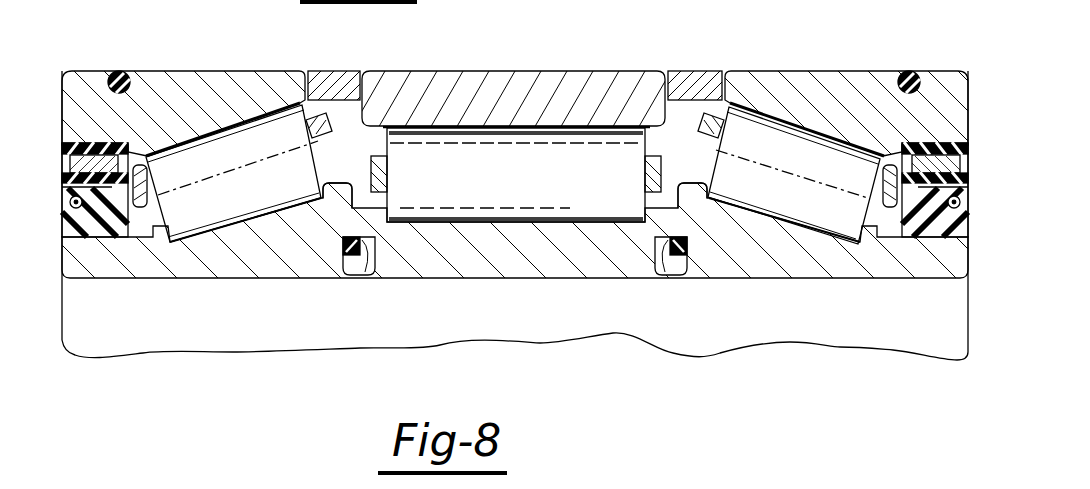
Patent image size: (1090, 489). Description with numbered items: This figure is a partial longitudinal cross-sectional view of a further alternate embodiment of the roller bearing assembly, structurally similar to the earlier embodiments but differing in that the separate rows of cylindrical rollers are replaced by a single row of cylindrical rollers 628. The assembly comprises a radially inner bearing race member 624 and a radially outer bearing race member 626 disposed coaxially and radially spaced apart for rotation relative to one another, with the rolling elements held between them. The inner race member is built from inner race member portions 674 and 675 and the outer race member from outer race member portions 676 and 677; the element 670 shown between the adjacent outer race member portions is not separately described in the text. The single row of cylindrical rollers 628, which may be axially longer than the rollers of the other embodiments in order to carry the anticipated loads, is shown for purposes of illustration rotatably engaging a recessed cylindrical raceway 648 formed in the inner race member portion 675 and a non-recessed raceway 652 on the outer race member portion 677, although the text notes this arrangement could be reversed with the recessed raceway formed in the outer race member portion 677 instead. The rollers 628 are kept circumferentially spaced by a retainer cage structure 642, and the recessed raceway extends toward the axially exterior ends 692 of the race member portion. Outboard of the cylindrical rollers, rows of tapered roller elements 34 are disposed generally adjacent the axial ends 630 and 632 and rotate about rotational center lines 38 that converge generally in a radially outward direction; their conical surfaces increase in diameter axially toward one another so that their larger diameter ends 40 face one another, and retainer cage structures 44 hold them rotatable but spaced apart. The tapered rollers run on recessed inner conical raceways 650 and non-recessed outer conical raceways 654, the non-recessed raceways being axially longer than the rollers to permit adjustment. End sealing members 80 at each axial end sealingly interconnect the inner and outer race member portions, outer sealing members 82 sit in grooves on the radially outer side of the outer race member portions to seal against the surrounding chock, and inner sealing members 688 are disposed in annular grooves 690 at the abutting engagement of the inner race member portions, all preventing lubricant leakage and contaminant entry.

The tapered roller elements 34 is at (218, 212).
The rotational center lines 38 is at (213, 160).
The larger diameter ends 40 is at (322, 150).
The retainer cage structures 44 is at (147, 214).
The end sealing members 80 is at (97, 238).
The outer sealing member 82 is at (118, 72).
The inner ring 624 is at (181, 284).
The outer ring 626 is at (526, 82).
The cylindrical rollers 628 is at (607, 208).
The end face 630 is at (61, 280).
The end face 632 is at (972, 280).
The cylindrical roller raceway 642 is at (430, 112).
The recessed cylindrical raceway 648 is at (497, 222).
The inner raceway 650 is at (257, 214).
The non-recessed raceway 652 is at (390, 156).
The outer raceway 654 is at (240, 128).
The spacer 670 is at (345, 90).
The shaft surface 674 is at (230, 338).
The inner race member portion 675 is at (540, 327).
The outer ring end section 676 is at (224, 86).
The outer race member portion 677 is at (614, 95).
The O-ring seal 688 is at (358, 262).
The seal cavity 690 is at (373, 258).
The rib 692 is at (335, 230).